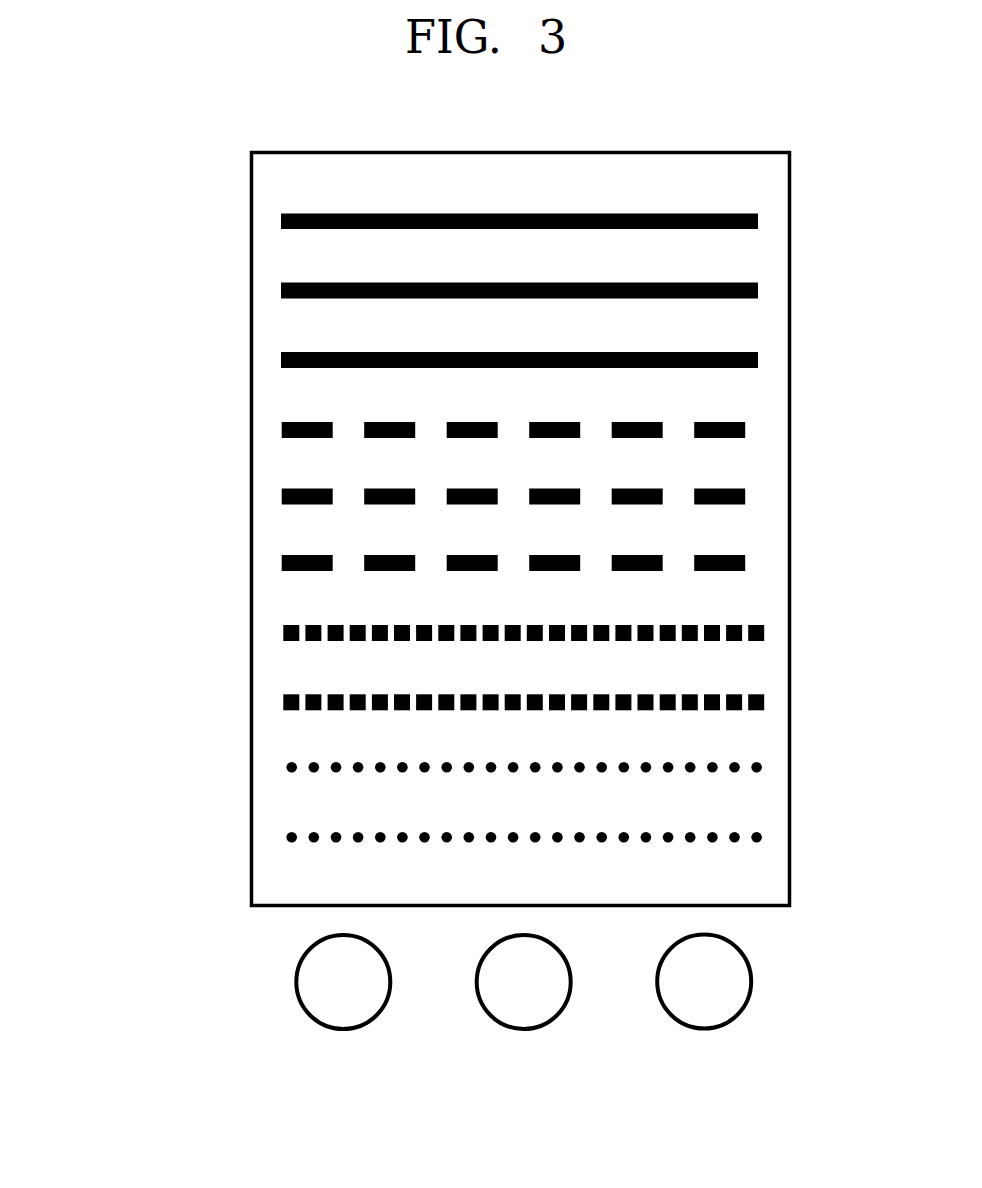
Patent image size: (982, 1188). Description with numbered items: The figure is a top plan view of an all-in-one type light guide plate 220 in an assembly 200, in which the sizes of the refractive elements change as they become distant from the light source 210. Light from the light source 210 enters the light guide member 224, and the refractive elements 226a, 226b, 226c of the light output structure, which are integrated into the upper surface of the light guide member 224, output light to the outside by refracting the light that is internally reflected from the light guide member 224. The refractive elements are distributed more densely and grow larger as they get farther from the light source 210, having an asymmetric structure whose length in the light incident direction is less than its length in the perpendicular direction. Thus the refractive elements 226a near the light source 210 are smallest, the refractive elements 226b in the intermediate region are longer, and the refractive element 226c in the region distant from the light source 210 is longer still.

The display apparatus 200 is at (178, 718).
The light source 210 is at (752, 980).
The all-in-one type light guide plate 220 is at (808, 208).
The light guide member 224 is at (773, 568).
The refractive elements 226a is at (757, 767).
The refractive elements 226b is at (746, 428).
The refractive element 226c is at (758, 290).